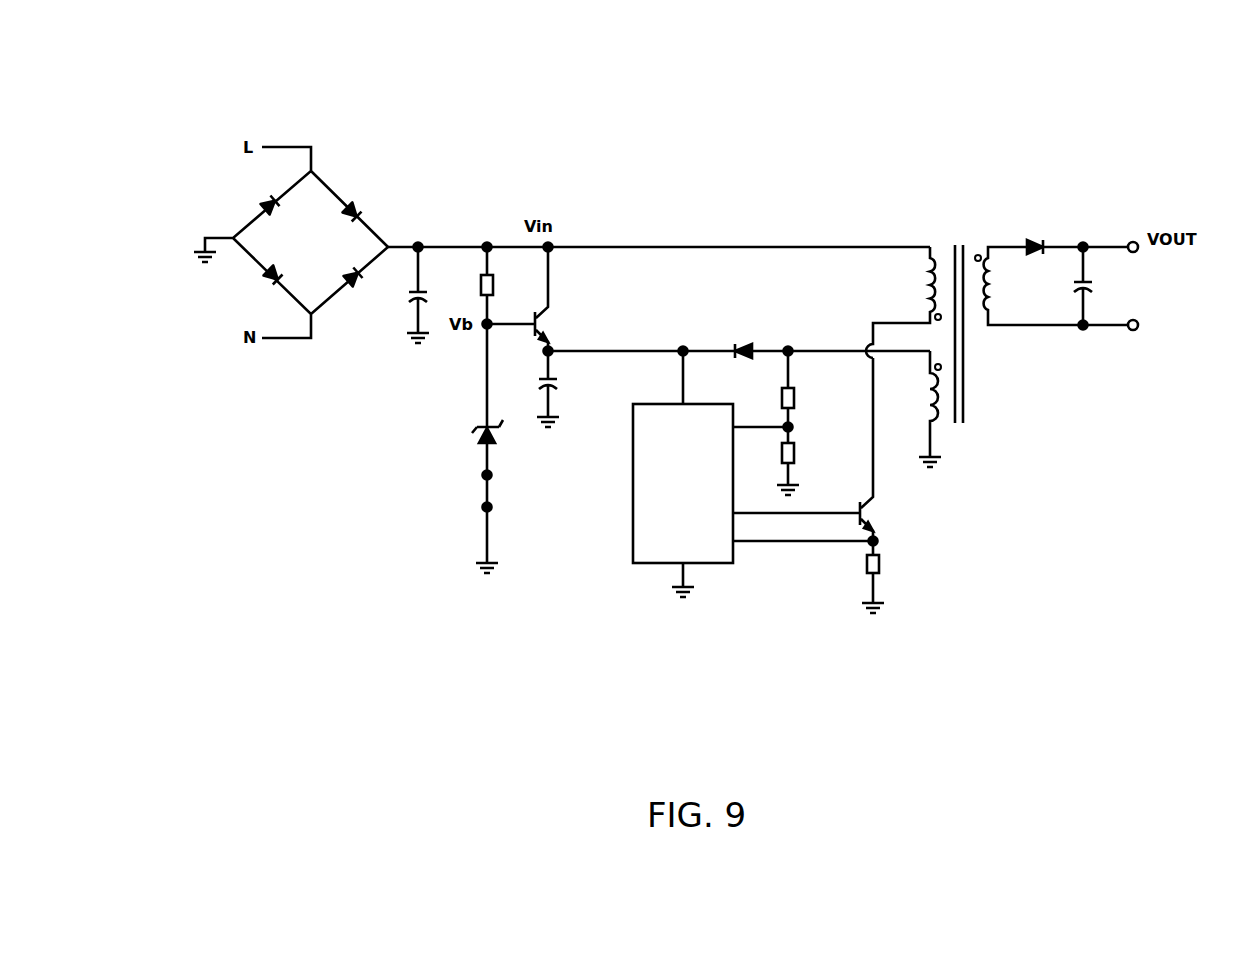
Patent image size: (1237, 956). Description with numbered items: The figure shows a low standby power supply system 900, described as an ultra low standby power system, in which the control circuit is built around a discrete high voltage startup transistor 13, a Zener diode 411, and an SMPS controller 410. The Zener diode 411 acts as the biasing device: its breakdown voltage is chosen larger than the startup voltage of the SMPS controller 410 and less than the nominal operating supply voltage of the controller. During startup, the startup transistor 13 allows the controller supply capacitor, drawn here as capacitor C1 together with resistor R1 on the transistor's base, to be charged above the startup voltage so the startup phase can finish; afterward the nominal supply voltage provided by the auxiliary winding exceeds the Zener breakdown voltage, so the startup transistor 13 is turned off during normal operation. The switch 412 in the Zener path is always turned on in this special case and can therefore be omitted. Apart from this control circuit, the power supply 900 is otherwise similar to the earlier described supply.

The low standby power supply system 900 is at (1044, 111).
The high voltage startup transistor 13 is at (558, 318).
The resistor R1 is at (478, 284).
The capacitor C1 is at (566, 378).
The SMPS controller 410 is at (622, 527).
The Zener diode 411 is at (477, 449).
The switch 412 is at (478, 505).